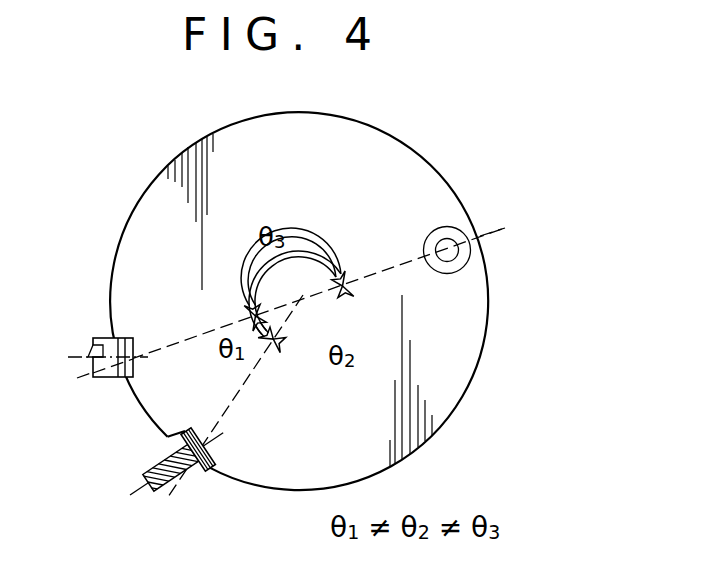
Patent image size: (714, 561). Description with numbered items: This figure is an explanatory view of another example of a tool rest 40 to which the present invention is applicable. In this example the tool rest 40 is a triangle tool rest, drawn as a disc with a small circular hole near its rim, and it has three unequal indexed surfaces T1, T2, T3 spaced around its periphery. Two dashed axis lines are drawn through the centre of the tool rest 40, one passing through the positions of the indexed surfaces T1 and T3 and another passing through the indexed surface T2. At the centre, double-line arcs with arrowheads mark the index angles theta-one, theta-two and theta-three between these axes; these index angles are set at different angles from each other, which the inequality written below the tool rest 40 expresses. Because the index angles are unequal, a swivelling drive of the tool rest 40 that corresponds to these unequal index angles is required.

The tool rest 40 is at (443, 207).
The indexed surface T1 is at (98, 376).
The indexed surface T2 is at (176, 477).
The indexed surface T3 is at (503, 253).